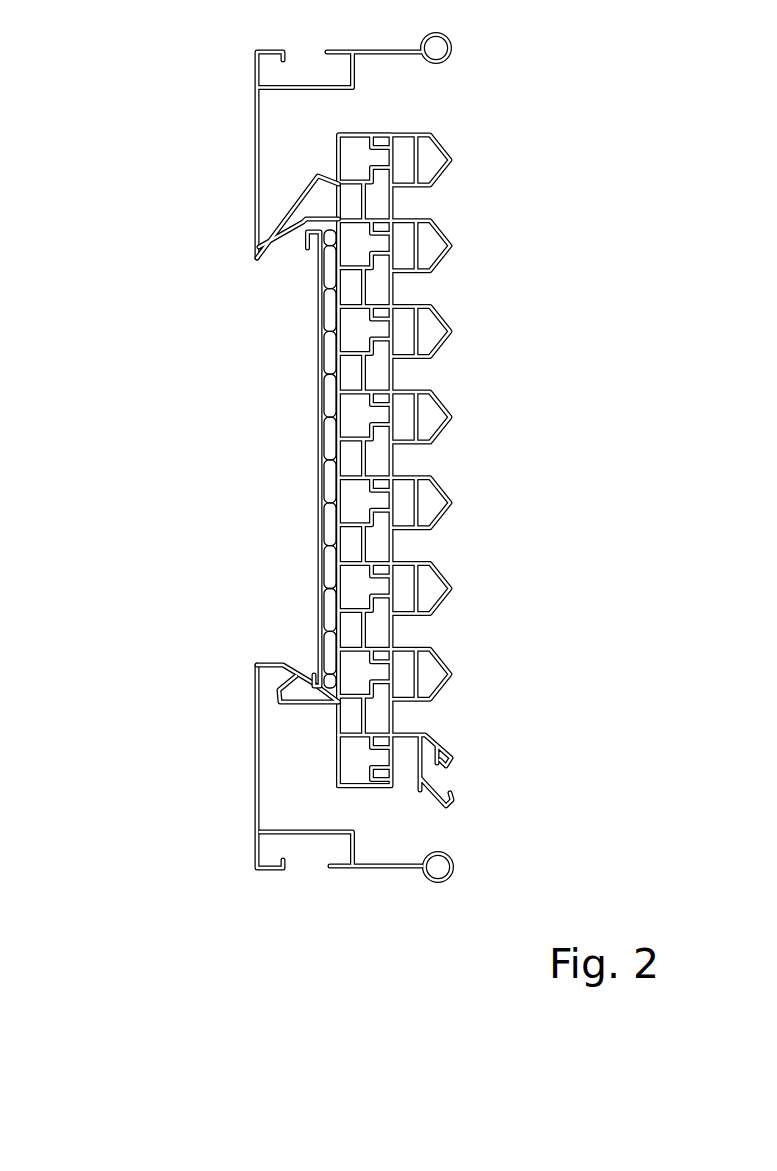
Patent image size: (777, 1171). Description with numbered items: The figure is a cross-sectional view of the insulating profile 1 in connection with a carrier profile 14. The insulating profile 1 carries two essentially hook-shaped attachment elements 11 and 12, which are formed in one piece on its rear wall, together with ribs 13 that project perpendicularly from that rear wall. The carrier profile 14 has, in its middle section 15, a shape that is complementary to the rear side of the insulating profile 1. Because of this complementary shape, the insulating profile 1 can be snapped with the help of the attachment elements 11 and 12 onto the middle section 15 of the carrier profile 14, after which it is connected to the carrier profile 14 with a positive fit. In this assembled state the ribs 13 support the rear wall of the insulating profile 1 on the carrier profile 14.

The insulating profile 1 is at (384, 458).
The attachment element 11 is at (295, 202).
The attachment element 12 is at (300, 702).
The ribs 13 is at (325, 332).
The carrier profile 14 is at (236, 172).
The middle section 15 is at (287, 248).